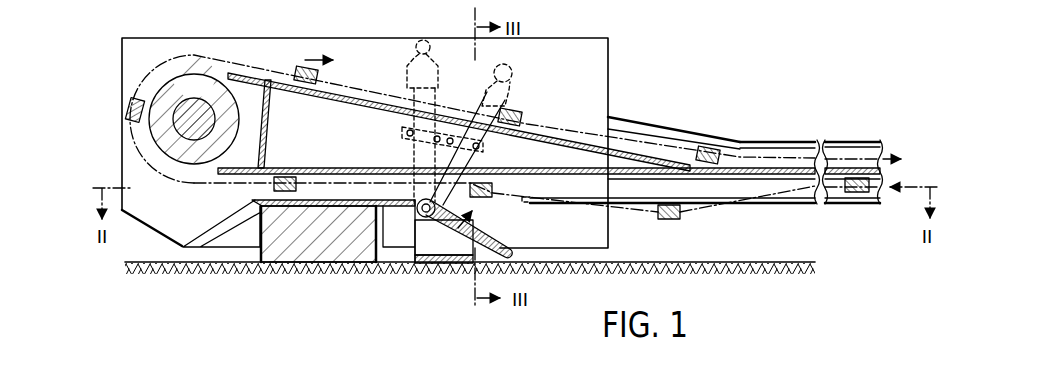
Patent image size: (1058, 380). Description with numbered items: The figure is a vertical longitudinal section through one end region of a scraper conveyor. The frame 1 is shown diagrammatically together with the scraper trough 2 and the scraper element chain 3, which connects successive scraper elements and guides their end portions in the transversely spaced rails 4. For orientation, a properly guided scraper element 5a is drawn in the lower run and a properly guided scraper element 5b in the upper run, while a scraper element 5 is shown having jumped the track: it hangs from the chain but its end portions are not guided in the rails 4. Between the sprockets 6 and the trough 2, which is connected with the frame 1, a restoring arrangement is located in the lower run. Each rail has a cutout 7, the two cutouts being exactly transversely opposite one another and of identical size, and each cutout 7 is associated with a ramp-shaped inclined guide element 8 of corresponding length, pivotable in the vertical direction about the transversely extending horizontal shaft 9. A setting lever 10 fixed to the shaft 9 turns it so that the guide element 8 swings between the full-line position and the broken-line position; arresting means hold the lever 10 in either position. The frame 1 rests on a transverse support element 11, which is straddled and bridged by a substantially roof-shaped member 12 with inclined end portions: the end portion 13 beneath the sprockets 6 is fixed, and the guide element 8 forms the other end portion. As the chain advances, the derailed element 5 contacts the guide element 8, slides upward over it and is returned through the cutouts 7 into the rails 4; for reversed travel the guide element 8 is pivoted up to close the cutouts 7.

The frame 1 is at (278, 50).
The scraper trough 2 is at (740, 148).
The scraper element chain 3 is at (630, 143).
The rails 4 is at (735, 190).
The scraper element 5 is at (668, 221).
The scraper element 5a is at (858, 193).
The scraper element 5b is at (521, 108).
The sprockets 6 is at (190, 113).
The cutout 7 is at (450, 222).
The inclined guide element 8 is at (428, 240).
The horizontal shaft 9 is at (418, 213).
The setting lever 10 is at (417, 85).
The transverse support element 11 is at (285, 253).
The roof-shaped member 12 is at (320, 198).
The end portion 13 is at (210, 233).